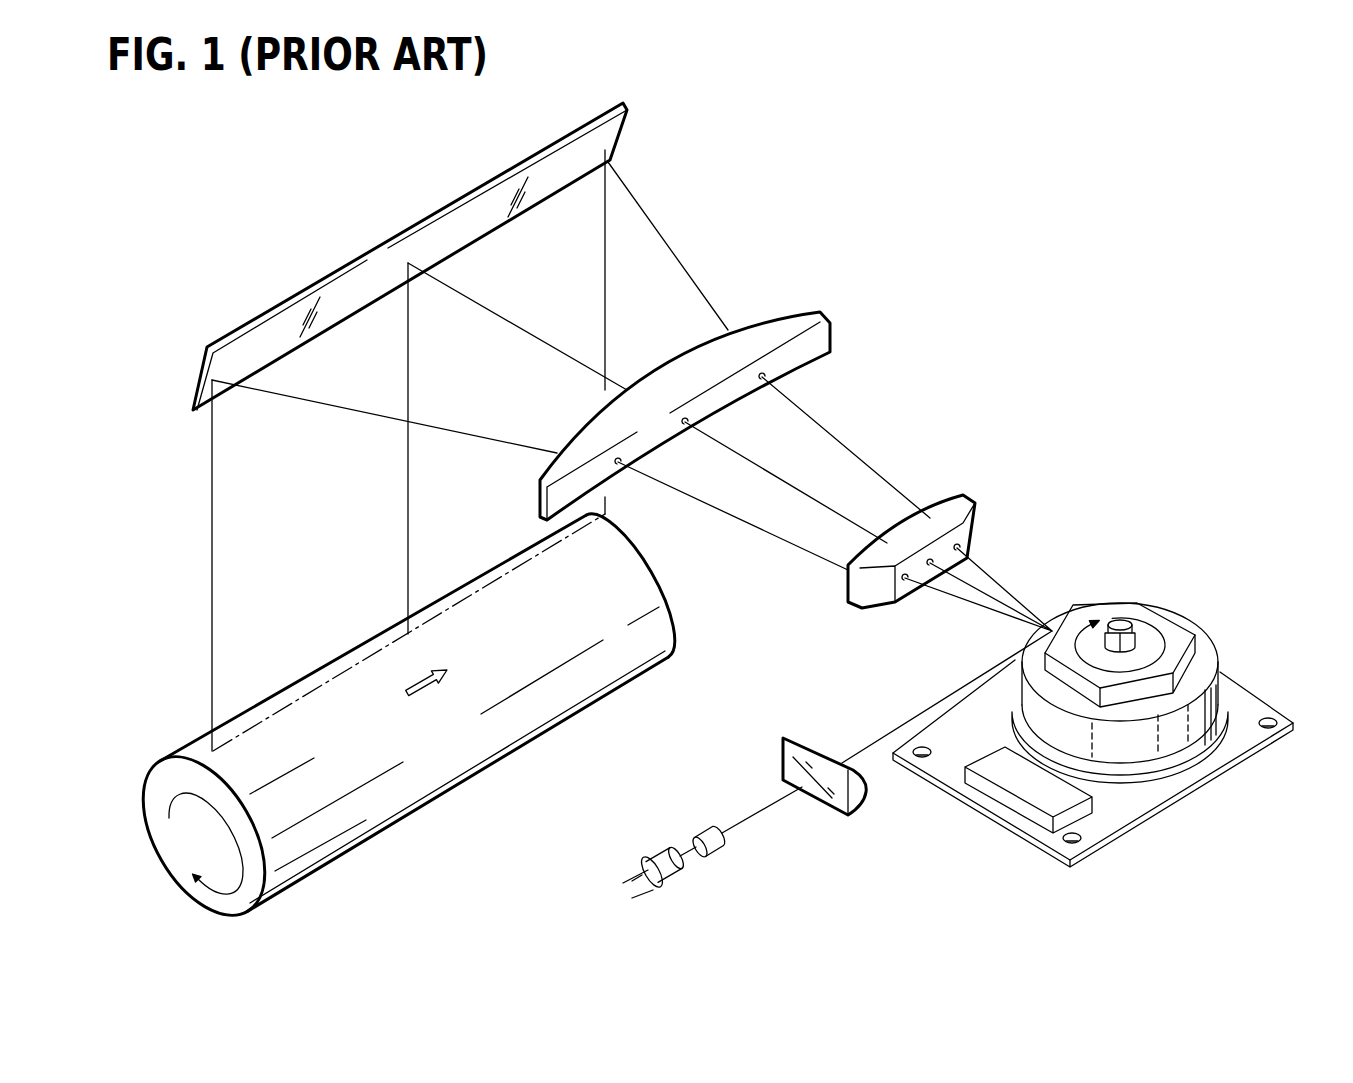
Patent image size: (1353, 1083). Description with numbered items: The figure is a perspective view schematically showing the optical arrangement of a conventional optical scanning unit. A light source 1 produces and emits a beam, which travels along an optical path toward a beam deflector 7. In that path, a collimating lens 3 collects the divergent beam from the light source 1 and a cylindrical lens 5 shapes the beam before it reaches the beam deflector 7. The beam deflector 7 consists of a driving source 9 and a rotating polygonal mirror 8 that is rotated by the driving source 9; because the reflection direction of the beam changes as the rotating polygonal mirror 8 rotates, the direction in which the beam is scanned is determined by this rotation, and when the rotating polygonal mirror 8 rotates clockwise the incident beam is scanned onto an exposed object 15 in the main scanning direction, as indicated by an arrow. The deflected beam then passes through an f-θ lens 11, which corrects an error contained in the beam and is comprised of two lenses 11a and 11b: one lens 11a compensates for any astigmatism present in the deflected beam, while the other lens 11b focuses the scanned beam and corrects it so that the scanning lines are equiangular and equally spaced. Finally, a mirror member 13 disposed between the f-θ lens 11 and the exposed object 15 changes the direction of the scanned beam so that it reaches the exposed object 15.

The light source 1 is at (663, 847).
The collimating lens 3 is at (708, 827).
The cylindrical lens 5 is at (812, 747).
The beam deflector 7 is at (1103, 681).
The rotating polygonal mirror 8 is at (1148, 695).
The driving source 9 is at (1208, 703).
The f-θ lens 11 is at (796, 471).
The lens 11a is at (950, 512).
The lens 11b is at (830, 323).
The mirror member 13 is at (617, 136).
The exposed object 15 is at (316, 668).